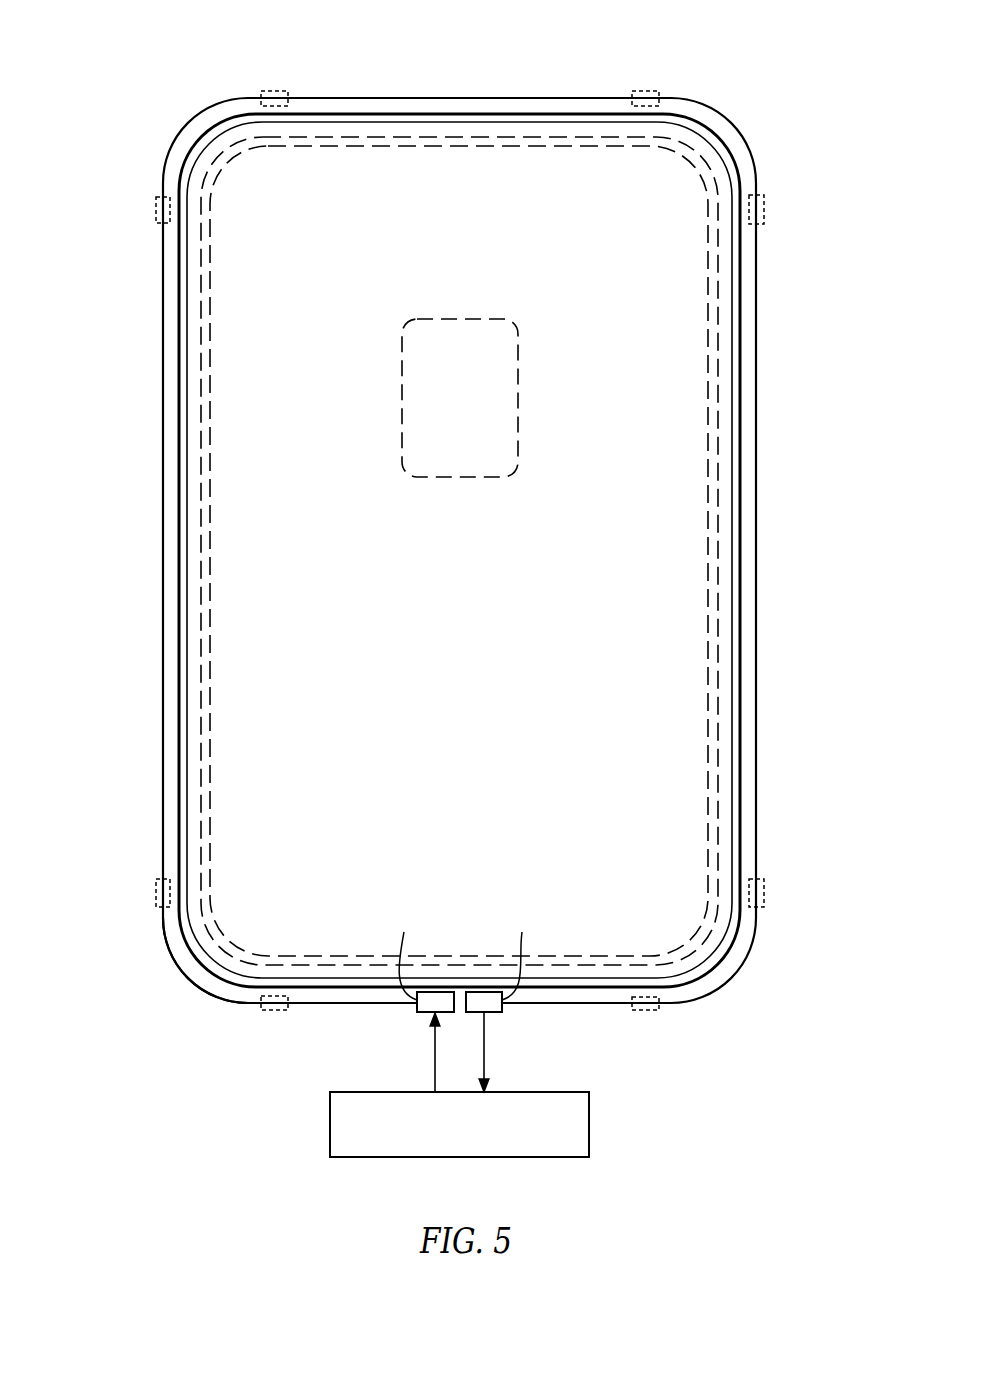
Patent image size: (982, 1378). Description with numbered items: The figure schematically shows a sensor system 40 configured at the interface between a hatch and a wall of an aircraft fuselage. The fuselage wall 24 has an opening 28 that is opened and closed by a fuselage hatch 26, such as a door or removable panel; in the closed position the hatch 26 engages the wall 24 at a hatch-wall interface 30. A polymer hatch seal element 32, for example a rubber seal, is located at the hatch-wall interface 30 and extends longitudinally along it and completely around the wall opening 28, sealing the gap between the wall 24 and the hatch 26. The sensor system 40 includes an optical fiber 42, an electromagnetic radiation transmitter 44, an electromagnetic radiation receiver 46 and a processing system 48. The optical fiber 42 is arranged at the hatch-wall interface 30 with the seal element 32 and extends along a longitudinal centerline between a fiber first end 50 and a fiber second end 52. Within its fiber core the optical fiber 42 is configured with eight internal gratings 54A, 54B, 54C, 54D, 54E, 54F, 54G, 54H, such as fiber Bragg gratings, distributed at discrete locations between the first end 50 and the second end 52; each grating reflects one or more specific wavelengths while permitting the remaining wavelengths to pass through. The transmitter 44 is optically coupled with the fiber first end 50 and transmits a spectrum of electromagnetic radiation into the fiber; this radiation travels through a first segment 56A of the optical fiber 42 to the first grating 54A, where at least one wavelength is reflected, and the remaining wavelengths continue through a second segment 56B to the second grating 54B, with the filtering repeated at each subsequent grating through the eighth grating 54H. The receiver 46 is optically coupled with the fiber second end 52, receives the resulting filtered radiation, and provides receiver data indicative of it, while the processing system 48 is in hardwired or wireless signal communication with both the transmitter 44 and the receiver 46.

The sensor system 40 is at (758, 69).
The optical fiber 42 is at (757, 528).
The hatch seal element 32 is at (740, 370).
The fuselage hatch 26 is at (725, 710).
The fuselage wall 24 is at (716, 770).
The opening 28 is at (463, 551).
The hatch-wall interface 30 is at (716, 808).
The electromagnetic radiation transmitter 44 is at (425, 1014).
The electromagnetic radiation receiver 46 is at (490, 1013).
The processing system 48 is at (589, 1130).
The first end of the optical fiber 50 is at (404, 954).
The second end of the optical fiber 52 is at (520, 954).
The first grating 54A is at (265, 1012).
The second grating 54B is at (156, 893).
The grating 54C is at (157, 208).
The grating 54D is at (275, 95).
The grating 54E is at (645, 95).
The grating 54F is at (764, 211).
The grating 54G is at (764, 891).
The eighth grating 54H is at (650, 1013).
The first segment of the optical fiber 56A is at (317, 1005).
The second segment of the optical fiber 56B is at (175, 962).